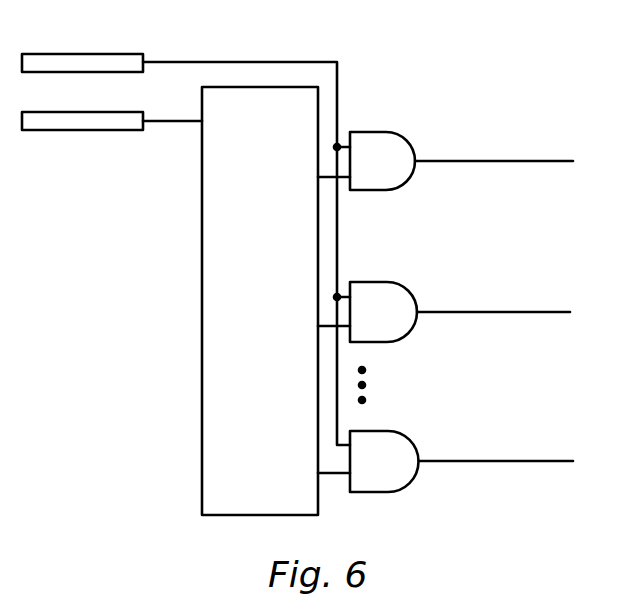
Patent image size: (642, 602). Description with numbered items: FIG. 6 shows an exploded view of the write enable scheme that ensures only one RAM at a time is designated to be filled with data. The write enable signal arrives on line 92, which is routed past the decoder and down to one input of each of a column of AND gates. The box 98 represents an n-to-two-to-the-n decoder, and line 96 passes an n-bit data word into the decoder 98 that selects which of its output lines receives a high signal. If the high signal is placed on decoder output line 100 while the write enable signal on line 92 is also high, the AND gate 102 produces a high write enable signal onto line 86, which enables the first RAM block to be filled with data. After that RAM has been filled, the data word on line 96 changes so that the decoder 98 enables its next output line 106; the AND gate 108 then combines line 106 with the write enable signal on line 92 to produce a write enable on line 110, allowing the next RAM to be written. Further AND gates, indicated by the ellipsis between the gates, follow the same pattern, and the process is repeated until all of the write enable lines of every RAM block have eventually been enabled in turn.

The write enable signal line 92 is at (213, 61).
The line 96 is at (172, 122).
The decoder 98 is at (212, 299).
The decoder output line 100 is at (320, 180).
The AND gate 102 is at (384, 150).
The write enable line 86 is at (492, 160).
The decoder output line 106 is at (322, 327).
The AND gate 108 is at (387, 298).
The write enable line 110 is at (493, 310).